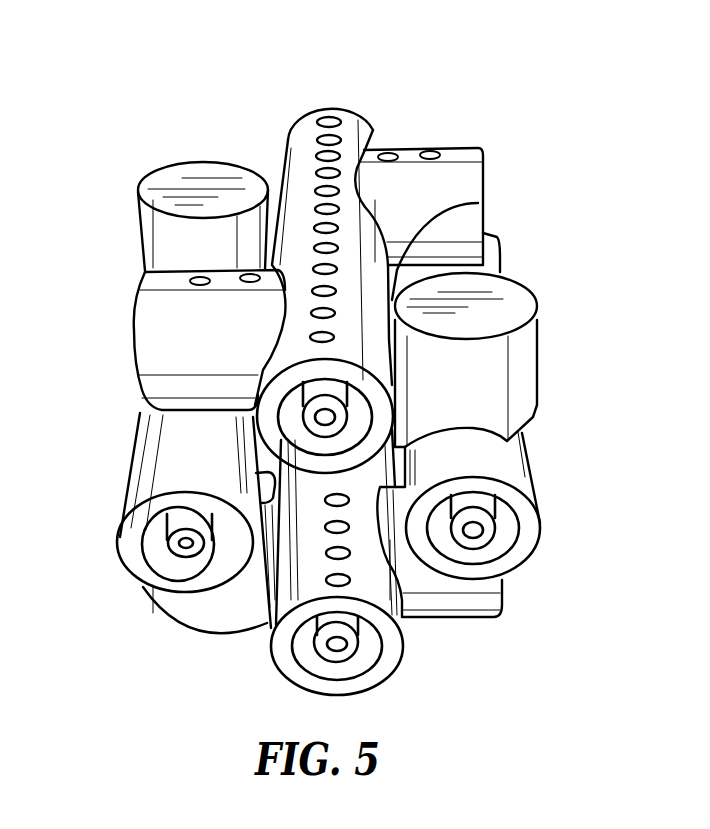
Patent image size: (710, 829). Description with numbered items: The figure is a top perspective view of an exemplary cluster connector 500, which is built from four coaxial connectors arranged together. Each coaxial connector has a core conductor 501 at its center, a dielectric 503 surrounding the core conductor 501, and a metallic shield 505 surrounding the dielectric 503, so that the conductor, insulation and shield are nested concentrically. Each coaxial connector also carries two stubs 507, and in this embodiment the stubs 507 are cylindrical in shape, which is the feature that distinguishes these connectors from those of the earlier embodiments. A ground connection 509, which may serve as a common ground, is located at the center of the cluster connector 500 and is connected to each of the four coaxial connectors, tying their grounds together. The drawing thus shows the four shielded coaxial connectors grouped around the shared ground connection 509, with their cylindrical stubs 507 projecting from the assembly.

The cluster connector 500 is at (530, 80).
The core conductor 501 is at (183, 547).
The dielectric 503 is at (167, 543).
The metallic shield 505 is at (347, 122).
The stubs 507 is at (134, 337).
The ground connection 509 is at (478, 203).